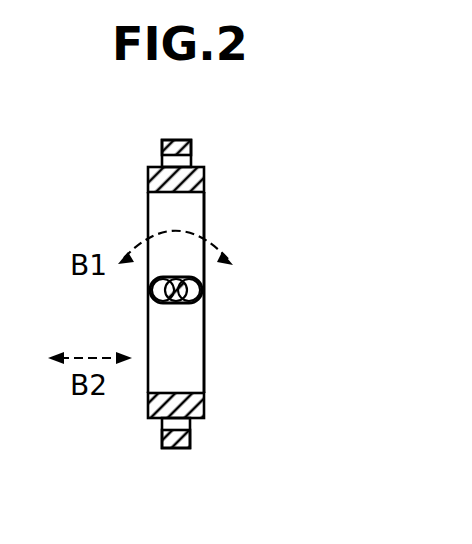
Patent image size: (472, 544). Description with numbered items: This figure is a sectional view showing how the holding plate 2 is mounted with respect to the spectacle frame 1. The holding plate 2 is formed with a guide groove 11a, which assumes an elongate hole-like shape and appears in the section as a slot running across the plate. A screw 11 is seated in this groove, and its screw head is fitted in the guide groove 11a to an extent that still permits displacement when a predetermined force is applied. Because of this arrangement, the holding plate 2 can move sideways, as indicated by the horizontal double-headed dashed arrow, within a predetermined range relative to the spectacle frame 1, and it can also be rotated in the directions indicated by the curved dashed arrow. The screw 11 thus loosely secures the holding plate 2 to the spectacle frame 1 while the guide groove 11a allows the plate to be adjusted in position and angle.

The spectacle frame 1 is at (191, 142).
The holding plate 2 is at (204, 178).
The screw 11 is at (203, 305).
The guide groove 11a is at (203, 277).